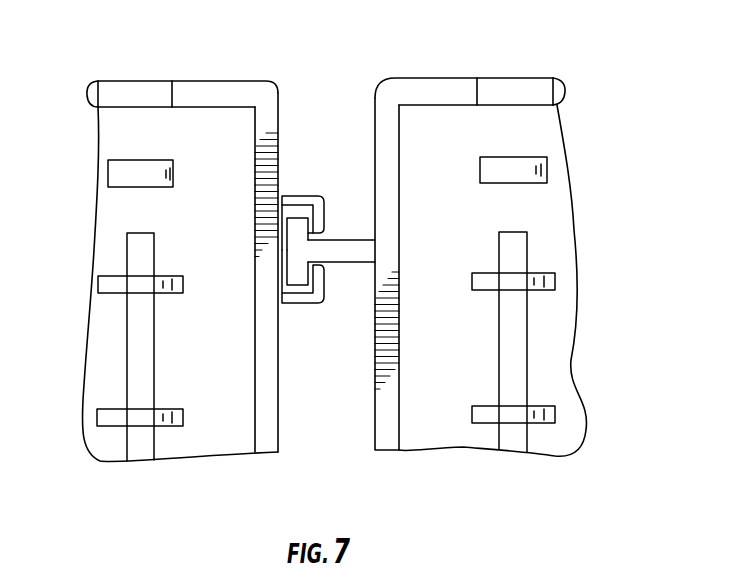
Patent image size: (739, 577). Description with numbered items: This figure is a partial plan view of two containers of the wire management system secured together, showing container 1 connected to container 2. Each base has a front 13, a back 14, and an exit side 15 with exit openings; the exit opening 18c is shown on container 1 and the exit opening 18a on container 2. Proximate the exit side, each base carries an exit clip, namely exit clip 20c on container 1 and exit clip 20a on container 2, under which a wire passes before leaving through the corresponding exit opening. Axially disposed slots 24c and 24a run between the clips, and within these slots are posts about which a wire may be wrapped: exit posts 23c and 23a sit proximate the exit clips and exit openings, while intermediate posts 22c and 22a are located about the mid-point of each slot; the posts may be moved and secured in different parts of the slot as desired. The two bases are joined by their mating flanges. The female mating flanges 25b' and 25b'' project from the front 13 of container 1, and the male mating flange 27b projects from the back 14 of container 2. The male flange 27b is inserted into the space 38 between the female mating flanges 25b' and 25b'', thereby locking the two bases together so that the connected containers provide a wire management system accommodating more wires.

The container 1 is at (106, 225).
The container 2 is at (560, 211).
The front 13 is at (272, 113).
The back 14 is at (380, 412).
The exit side 15 is at (212, 88).
The exit opening 18c is at (136, 88).
The exit opening 18a is at (507, 85).
The exit clip 20c is at (120, 172).
The exit clip 20a is at (545, 160).
The intermediate post 22c is at (95, 418).
The intermediate post 22a is at (557, 415).
The exit post 23c is at (95, 284).
The exit post 23a is at (557, 281).
The slot 24c is at (133, 358).
The slot 24a is at (520, 338).
The female mating flange 25b' is at (303, 303).
The female mating flange 25b'' is at (324, 201).
The male mating flange 27b is at (343, 230).
The space 38 is at (284, 197).